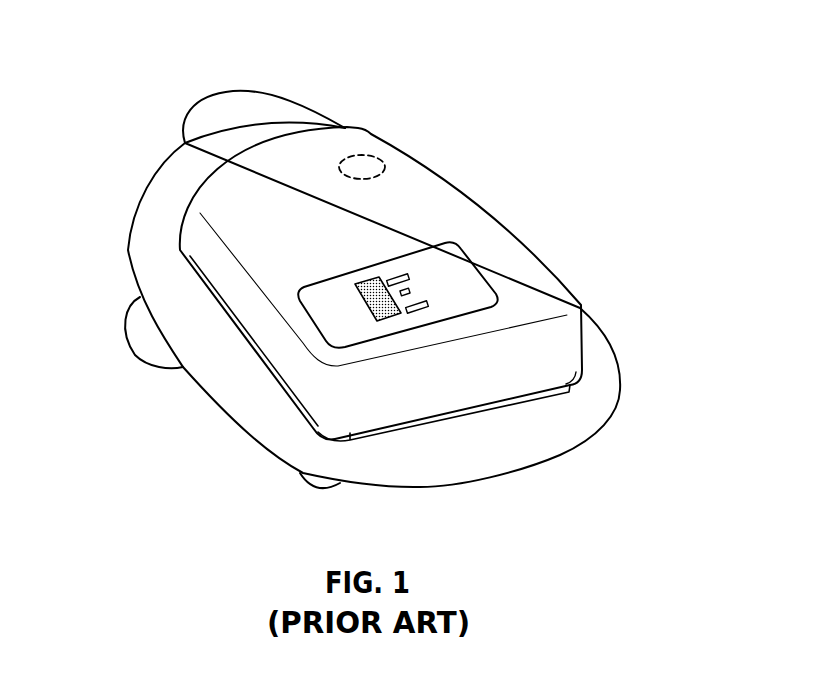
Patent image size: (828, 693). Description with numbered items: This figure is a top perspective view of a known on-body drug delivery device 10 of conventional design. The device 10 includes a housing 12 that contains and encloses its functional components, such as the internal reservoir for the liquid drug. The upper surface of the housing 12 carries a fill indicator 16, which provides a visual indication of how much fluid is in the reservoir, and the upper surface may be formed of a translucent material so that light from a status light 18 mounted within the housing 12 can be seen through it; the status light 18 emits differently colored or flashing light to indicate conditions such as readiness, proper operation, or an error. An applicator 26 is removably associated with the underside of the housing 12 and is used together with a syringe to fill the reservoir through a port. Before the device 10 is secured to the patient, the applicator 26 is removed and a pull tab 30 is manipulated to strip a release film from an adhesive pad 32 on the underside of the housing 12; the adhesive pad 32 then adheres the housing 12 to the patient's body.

The on-body device 10 is at (532, 198).
The housing 12 is at (540, 275).
The fill indicator 16 is at (360, 303).
The status light 18 is at (362, 157).
The applicator 26 is at (246, 102).
The pull tab 30 is at (140, 333).
The adhesive pad 32 is at (480, 467).